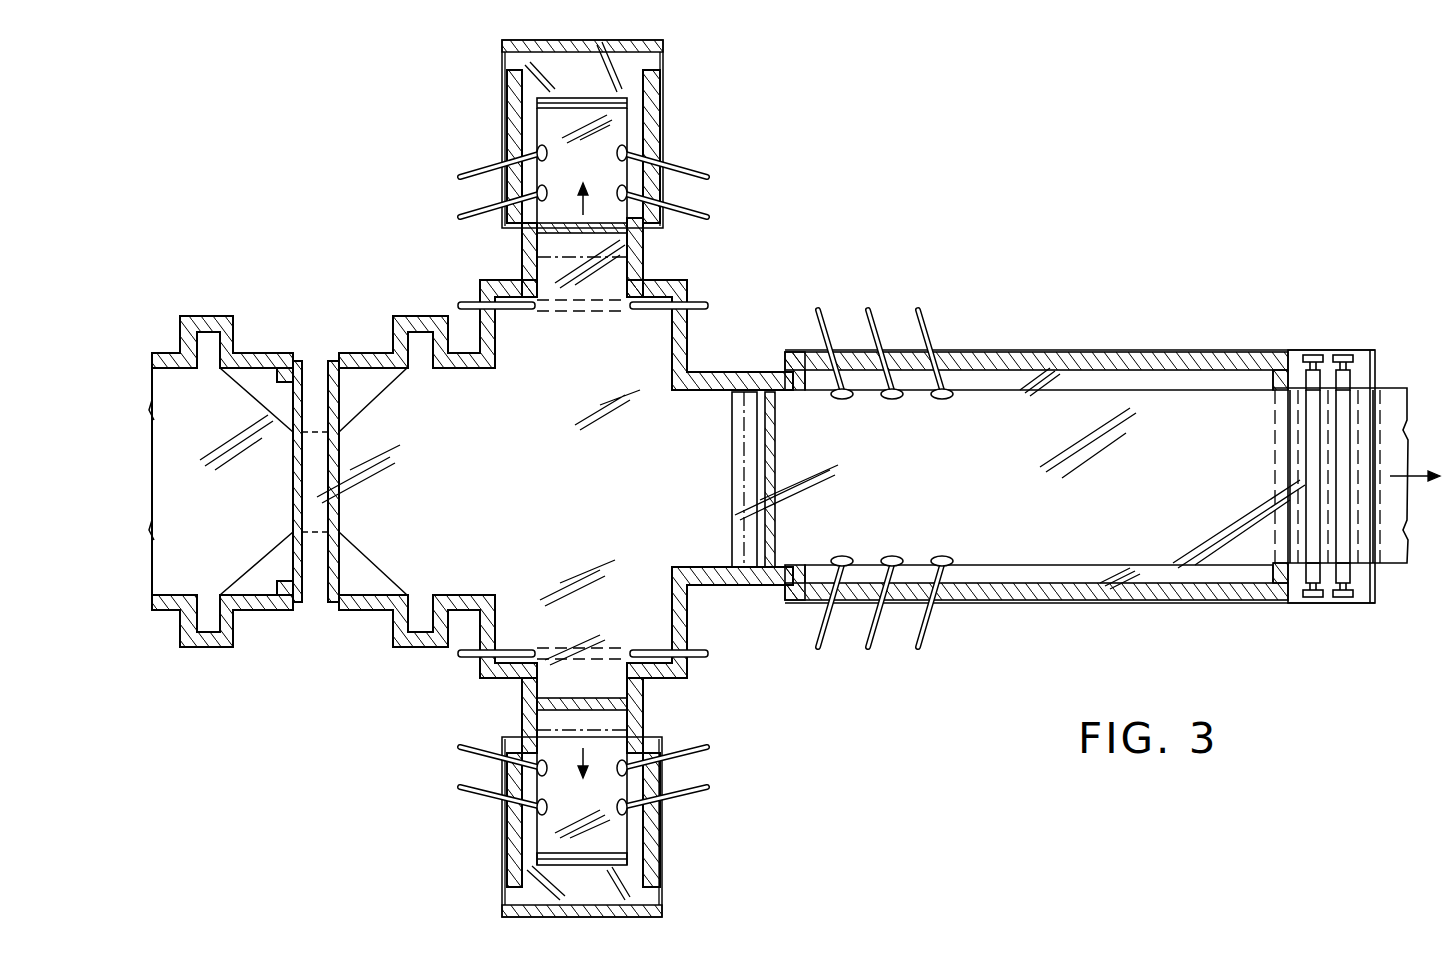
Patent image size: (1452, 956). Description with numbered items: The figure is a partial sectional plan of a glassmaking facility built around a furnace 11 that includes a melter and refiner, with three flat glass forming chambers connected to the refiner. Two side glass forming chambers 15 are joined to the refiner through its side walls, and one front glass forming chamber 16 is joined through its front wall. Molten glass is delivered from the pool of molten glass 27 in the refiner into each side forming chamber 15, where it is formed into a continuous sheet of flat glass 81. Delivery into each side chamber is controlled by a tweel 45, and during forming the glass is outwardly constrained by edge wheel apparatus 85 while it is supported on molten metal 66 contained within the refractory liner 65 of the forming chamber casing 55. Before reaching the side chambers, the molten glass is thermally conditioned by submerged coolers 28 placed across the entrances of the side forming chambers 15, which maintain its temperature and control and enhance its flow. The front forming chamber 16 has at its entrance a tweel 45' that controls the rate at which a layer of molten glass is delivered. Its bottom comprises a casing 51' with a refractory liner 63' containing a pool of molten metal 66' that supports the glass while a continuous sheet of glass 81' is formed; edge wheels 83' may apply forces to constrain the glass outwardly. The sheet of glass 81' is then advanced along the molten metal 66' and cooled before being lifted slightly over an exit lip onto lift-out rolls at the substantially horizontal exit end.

The furnace 11 is at (382, 300).
The side glass forming chambers 15 is at (455, 135).
The front glass forming chamber 16 is at (1158, 345).
The pool of molten glass 27 is at (572, 493).
The submerged coolers 28 is at (702, 302).
The tweel 45 is at (581, 466).
The tweel 45' is at (785, 479).
The casing 51' is at (1036, 342).
The forming chamber casing 55 is at (618, 40).
The refractory liner 63' is at (1036, 609).
The refractory liner 65 is at (558, 42).
The molten metal 66 is at (613, 474).
The pool of molten metal 66' is at (1039, 502).
The continuous sheet of flat glass 81 is at (582, 481).
The continuous sheet of glass 81' is at (1172, 488).
The edge wheels 83' is at (885, 481).
The edge wheel apparatus 85 is at (462, 215).